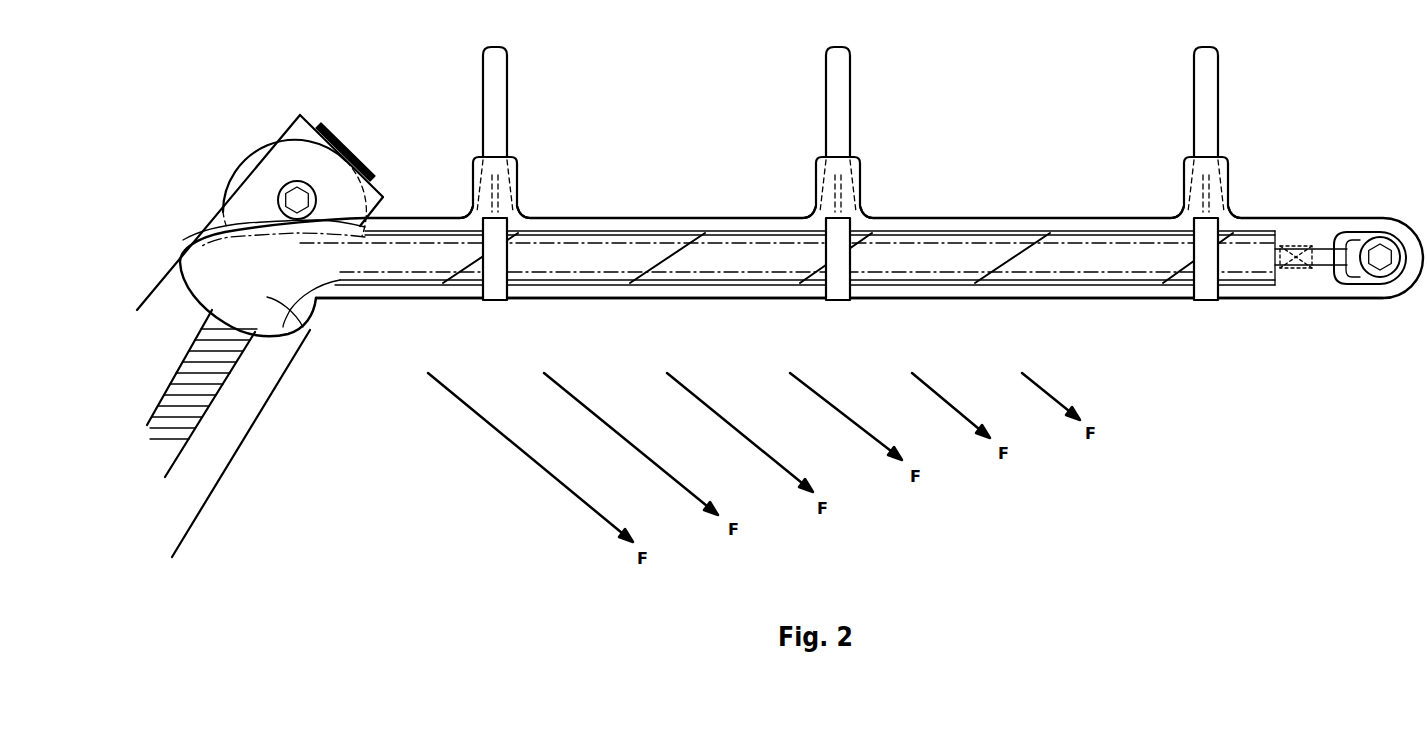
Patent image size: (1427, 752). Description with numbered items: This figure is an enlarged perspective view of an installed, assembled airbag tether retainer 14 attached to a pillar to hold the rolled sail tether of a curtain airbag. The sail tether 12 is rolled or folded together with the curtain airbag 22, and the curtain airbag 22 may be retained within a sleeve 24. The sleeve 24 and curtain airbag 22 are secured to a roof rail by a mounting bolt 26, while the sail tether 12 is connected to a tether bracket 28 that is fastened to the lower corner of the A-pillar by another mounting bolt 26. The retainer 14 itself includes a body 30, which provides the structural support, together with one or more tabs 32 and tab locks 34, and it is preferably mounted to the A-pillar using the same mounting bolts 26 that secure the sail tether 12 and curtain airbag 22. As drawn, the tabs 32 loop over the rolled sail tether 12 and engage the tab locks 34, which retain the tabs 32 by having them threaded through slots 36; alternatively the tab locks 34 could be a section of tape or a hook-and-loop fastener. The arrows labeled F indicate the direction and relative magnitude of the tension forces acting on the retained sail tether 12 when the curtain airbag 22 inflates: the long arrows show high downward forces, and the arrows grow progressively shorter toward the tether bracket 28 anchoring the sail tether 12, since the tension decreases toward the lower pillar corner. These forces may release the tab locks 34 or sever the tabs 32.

The sail tether 12 is at (661, 245).
The airbag tether retainer 14 is at (979, 56).
The curtain airbag 22 is at (303, 331).
The sleeve 24 is at (184, 288).
The mounting bolt 26 is at (297, 198).
The tether bracket 28 is at (1350, 240).
The body 30 is at (722, 310).
The tab 32 is at (493, 76).
The tab lock 34 is at (537, 203).
The slot 36 is at (470, 213).